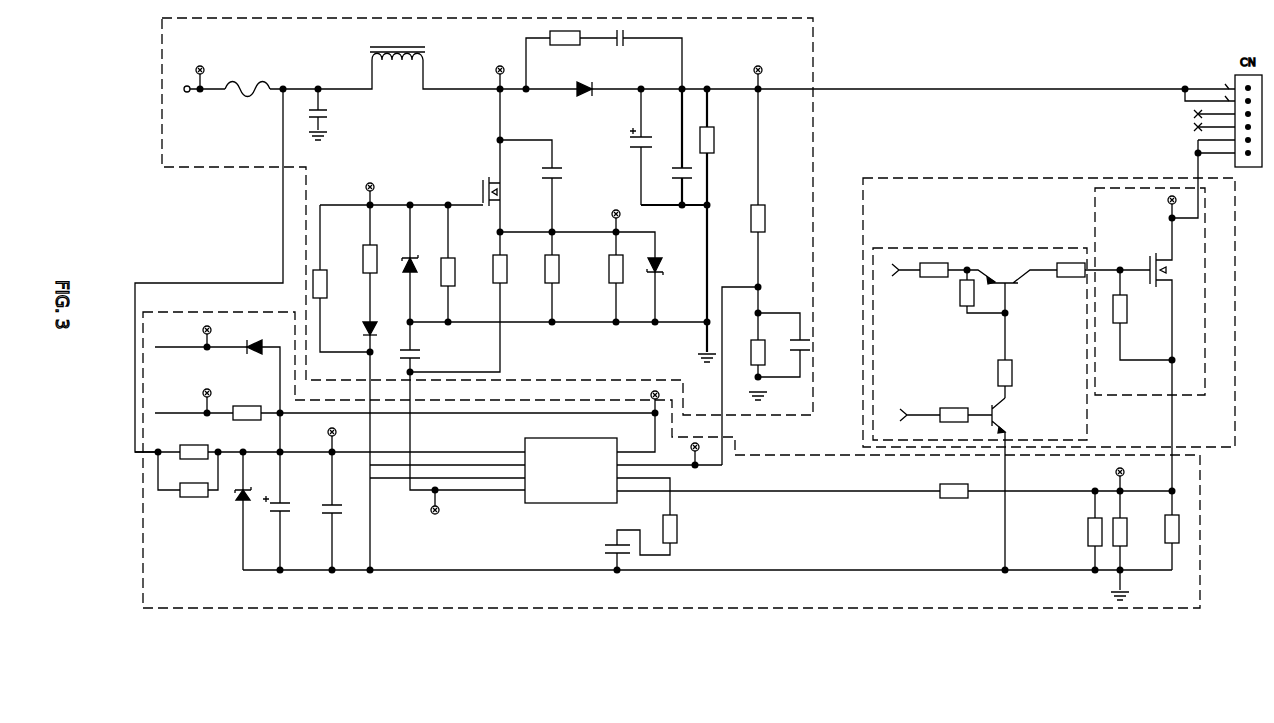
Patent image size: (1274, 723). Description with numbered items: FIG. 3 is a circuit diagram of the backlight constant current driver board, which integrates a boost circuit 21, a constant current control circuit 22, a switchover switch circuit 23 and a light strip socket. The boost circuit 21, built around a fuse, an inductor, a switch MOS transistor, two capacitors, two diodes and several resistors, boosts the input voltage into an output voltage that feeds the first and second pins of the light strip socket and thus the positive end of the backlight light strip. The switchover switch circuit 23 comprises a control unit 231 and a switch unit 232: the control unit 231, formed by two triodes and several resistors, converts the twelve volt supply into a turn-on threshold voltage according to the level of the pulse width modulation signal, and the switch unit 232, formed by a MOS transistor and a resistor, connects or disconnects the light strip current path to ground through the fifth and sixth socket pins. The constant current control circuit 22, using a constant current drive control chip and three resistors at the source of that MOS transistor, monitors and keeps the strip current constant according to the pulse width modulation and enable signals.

The boost circuit 21 is at (815, 78).
The constant current control circuit 22 is at (188, 310).
The switchover switch circuit 23 is at (1228, 450).
The control unit 231 is at (973, 245).
The switch unit 232 is at (1125, 188).